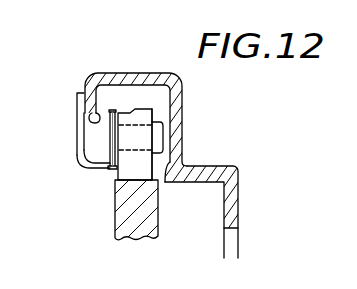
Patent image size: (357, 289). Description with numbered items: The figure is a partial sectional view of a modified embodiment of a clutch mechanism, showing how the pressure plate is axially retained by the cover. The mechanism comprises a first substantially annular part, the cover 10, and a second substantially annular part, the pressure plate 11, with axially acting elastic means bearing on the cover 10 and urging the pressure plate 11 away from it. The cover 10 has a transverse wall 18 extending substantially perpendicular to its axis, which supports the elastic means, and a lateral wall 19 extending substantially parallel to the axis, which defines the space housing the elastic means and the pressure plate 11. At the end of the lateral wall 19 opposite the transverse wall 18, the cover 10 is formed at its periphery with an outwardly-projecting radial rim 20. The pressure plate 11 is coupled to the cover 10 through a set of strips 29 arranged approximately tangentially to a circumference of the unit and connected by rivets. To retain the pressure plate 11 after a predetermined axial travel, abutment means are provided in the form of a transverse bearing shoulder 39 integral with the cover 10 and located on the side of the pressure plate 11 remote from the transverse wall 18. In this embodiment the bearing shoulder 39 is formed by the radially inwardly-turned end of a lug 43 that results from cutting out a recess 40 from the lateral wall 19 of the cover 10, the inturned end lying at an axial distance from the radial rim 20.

The cover 10 is at (247, 180).
The pressure plate 11 is at (114, 208).
The transverse wall 18 is at (238, 210).
The lateral wall 19 is at (205, 172).
The radial rim 20 is at (84, 91).
The strips 29 is at (112, 166).
The bearing shoulder 39 is at (91, 119).
The recess 40 is at (163, 174).
The lug 43 is at (143, 78).